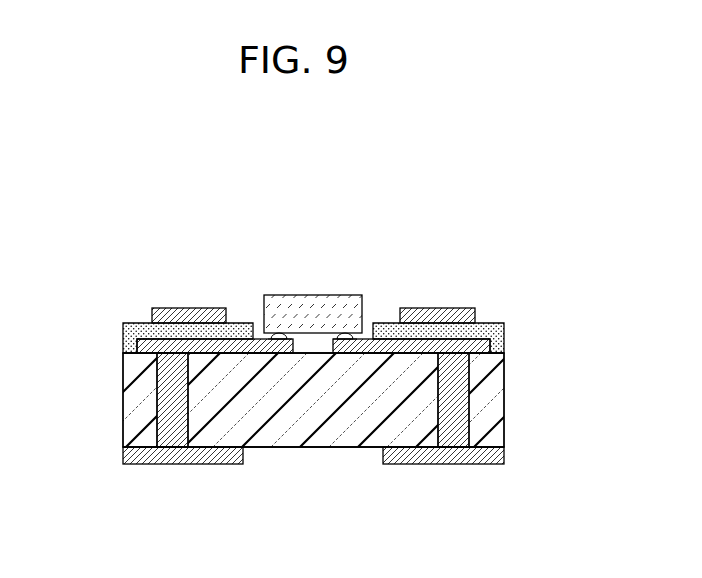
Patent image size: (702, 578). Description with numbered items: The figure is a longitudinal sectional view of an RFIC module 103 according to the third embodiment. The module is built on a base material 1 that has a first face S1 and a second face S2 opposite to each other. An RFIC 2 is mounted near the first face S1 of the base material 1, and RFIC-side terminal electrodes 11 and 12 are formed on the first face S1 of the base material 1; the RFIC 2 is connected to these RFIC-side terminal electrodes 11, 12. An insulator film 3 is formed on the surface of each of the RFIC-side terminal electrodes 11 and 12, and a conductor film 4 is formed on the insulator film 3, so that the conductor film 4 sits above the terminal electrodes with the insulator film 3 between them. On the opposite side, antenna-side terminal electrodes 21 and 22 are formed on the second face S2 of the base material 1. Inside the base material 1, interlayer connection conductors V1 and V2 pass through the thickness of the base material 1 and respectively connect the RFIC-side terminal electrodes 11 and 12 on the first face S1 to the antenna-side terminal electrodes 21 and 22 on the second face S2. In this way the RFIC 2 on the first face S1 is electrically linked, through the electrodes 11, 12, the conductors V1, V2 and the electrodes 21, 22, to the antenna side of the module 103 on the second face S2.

The RFIC module 103 is at (552, 195).
The base material 1 is at (493, 390).
The RFIC 2 is at (314, 305).
The insulator film 3 is at (497, 333).
The conductor film 4 is at (426, 316).
The RFIC-side terminal electrode 11 is at (172, 342).
The RFIC-side terminal electrode 12 is at (462, 345).
The antenna-side terminal electrode 21 is at (169, 462).
The antenna-side terminal electrode 22 is at (455, 462).
The interlayer connection conductor V1 is at (165, 405).
The interlayer connection conductor V2 is at (467, 416).
The first face S1 is at (112, 353).
The second face S2 is at (112, 447).